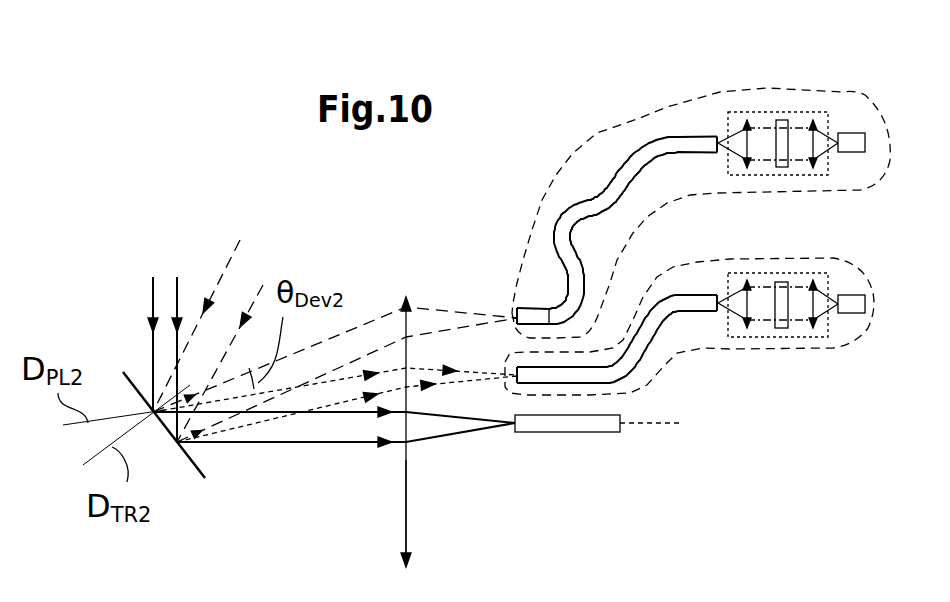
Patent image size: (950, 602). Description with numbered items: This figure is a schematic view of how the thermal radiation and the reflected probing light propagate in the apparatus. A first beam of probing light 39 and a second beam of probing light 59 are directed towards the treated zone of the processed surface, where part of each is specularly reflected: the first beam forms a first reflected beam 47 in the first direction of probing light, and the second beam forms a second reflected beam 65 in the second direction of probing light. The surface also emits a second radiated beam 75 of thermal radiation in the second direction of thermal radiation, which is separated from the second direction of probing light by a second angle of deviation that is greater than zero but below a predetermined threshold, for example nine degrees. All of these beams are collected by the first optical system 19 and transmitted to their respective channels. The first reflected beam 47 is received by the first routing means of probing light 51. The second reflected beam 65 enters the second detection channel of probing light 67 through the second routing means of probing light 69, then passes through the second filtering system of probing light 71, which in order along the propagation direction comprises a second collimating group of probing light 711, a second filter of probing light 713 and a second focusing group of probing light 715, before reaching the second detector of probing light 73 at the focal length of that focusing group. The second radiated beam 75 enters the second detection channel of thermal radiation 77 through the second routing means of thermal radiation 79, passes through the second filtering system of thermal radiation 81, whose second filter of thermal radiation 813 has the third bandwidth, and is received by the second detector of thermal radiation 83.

The first beam of probing light 39 is at (160, 297).
The second beam of probing light 59 is at (246, 282).
The second radiated beam 75 is at (384, 327).
The first optical system 19 is at (407, 495).
The first reflected beam 47 is at (335, 432).
The second reflected beam 65 is at (298, 397).
The first routing means of probing light 51 is at (570, 425).
The second routing means of thermal radiation 79 is at (587, 207).
The second detection channel of thermal radiation 77 is at (638, 120).
The second filtering system of thermal radiation 81 is at (747, 112).
The second filter of thermal radiation 813 is at (783, 120).
The second detector of thermal radiation 83 is at (853, 137).
The second routing means of probing light 69 is at (690, 303).
The second detection channel of probing light 67 is at (870, 333).
The second filtering system of probing light 71 is at (797, 337).
The second collimating group of probing light 711 is at (747, 287).
The second filter of probing light 713 is at (780, 280).
The second focusing group of probing light 715 is at (813, 283).
The second detector of probing light 73 is at (865, 303).